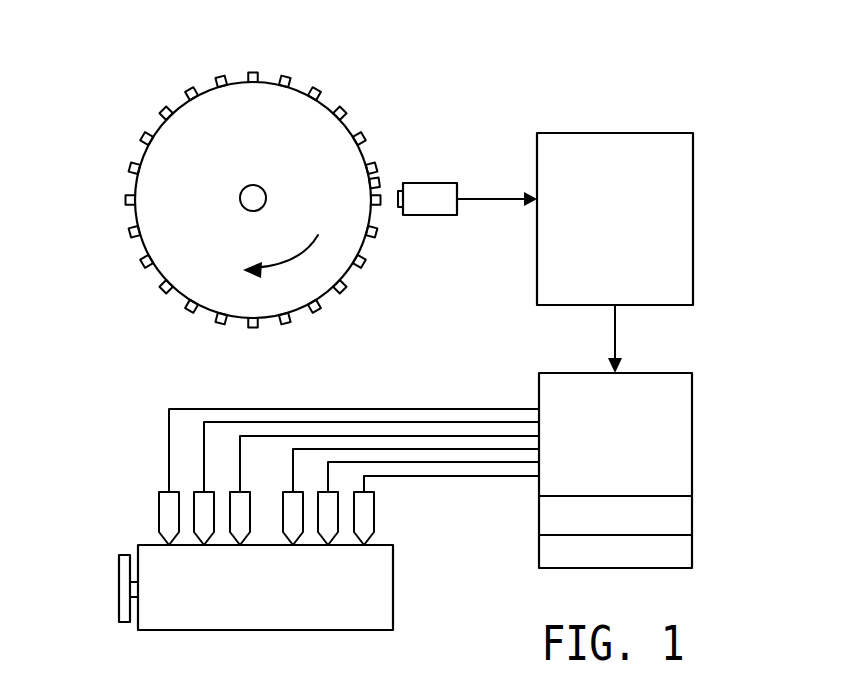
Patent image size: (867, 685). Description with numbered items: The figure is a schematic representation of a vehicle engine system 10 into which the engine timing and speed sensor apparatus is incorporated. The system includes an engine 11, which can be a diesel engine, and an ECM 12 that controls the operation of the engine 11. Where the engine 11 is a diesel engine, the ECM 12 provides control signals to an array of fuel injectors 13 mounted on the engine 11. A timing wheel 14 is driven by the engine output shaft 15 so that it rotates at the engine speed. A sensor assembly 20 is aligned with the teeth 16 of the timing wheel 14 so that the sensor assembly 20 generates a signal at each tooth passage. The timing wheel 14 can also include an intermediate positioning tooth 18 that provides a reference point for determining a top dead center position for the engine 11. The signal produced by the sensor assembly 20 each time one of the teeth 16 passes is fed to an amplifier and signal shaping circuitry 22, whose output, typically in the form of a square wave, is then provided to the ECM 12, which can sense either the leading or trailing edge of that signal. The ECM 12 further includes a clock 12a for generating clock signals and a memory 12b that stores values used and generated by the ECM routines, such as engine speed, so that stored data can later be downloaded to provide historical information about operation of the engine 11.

The vehicle engine system 10 is at (122, 358).
The engine 11 is at (393, 596).
The ECM 12 is at (657, 470).
The clock 12a is at (680, 521).
The memory 12b is at (683, 556).
The fuel injectors 13 is at (158, 484).
The timing wheel 14 is at (333, 107).
The engine output shaft 15 is at (132, 590).
The teeth 16 is at (220, 73).
The intermediate positioning tooth 18 is at (381, 180).
The sensor assembly 20 is at (443, 228).
The amplifier and signal shaping circuitry 22 is at (693, 228).